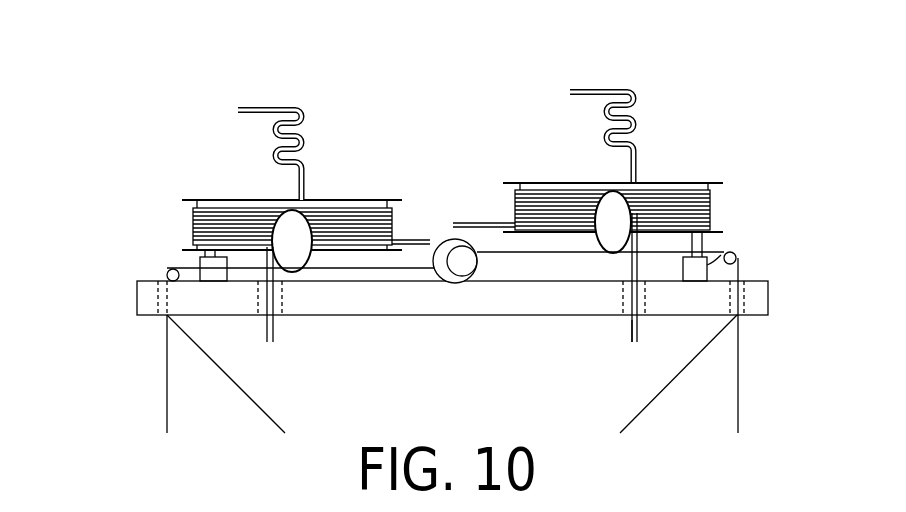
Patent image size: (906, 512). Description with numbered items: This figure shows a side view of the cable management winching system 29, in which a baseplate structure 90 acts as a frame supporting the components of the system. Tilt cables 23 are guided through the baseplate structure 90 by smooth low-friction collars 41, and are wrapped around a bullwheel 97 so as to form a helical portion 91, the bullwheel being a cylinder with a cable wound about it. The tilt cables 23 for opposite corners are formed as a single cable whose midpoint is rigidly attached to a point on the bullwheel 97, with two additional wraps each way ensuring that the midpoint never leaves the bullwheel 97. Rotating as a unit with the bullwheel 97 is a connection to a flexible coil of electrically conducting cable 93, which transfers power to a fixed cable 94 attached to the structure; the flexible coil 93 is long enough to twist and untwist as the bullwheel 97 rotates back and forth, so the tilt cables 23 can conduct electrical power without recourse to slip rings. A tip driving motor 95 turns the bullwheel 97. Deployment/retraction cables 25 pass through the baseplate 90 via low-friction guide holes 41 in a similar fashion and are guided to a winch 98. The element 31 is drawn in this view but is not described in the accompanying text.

The cable management winching system 29 is at (105, 229).
The first coil 31 is at (183, 198).
The fixed cable 94 is at (267, 107).
The flexible coil of electrically conducting cable 93 is at (635, 122).
The bullwheel 97 is at (720, 183).
The helical portion 91 is at (712, 210).
The tip driving motor 95 is at (722, 255).
The winch 98 is at (440, 237).
The baseplate structure 90 is at (768, 293).
The low-friction collars 41 is at (622, 302).
The tilt cables 23 is at (632, 338).
The deployment/retraction cables 25 is at (658, 395).